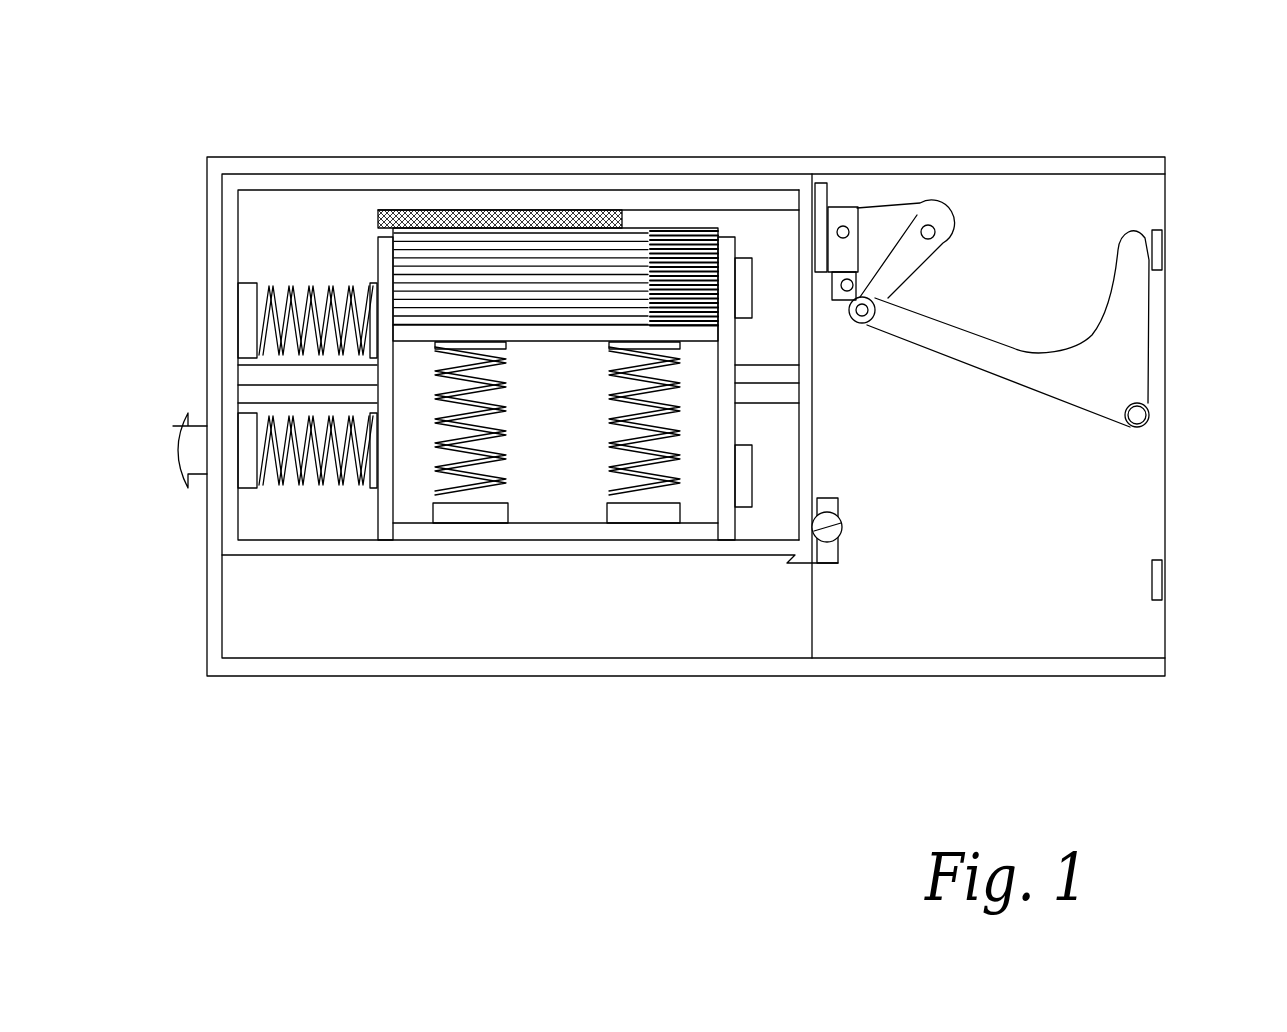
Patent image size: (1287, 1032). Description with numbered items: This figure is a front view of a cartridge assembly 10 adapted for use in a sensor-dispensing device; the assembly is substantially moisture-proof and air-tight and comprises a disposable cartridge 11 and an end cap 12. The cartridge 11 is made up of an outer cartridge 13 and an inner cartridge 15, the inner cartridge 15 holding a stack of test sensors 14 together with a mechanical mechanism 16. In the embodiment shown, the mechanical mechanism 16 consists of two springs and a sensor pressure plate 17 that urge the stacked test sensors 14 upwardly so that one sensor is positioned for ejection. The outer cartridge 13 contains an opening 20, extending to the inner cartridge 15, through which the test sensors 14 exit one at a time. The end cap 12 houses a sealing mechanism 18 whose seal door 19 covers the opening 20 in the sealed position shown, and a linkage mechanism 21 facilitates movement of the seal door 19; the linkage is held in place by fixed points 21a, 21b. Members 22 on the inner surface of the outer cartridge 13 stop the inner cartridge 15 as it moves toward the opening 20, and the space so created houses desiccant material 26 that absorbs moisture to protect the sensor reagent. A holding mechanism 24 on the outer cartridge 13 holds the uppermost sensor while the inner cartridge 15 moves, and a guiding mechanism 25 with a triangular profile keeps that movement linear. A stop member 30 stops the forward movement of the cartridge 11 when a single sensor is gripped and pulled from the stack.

The cartridge assembly 10 is at (1172, 84).
The disposable cartridge 11 is at (268, 217).
The end cap 12 is at (225, 673).
The outer cartridge 13 is at (335, 547).
The test sensors 14 is at (433, 215).
The inner cartridge 15 is at (440, 530).
The mechanical mechanism 16 is at (507, 503).
The sensor pressure plate 17 is at (677, 332).
The sealing mechanism 18 is at (942, 213).
The seal door 19 is at (822, 207).
The opening 20 is at (797, 227).
The linkage mechanism 21 is at (1123, 362).
The fixed point 21a is at (1137, 415).
The fixed point 21b is at (847, 291).
The members 22 is at (748, 318).
The holding mechanism 24 is at (538, 215).
The guiding mechanism 25 is at (257, 375).
The desiccant material 26 is at (790, 462).
The stop member 30 is at (828, 563).